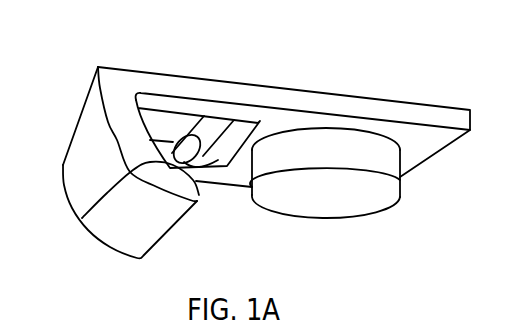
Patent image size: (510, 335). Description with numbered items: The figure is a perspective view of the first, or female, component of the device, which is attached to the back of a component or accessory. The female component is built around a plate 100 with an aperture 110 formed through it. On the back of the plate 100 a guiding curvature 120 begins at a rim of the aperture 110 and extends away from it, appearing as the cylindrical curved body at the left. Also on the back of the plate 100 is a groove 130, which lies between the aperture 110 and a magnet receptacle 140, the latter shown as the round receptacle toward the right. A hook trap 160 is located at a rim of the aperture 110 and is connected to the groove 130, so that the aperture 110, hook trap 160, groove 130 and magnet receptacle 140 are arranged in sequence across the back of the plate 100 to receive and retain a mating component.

The plate 100 is at (187, 77).
The aperture 110 is at (174, 126).
The guiding curvature 120 is at (82, 218).
The groove 130 is at (240, 130).
The magnet receptacle 140 is at (400, 153).
The hook trap 160 is at (228, 138).